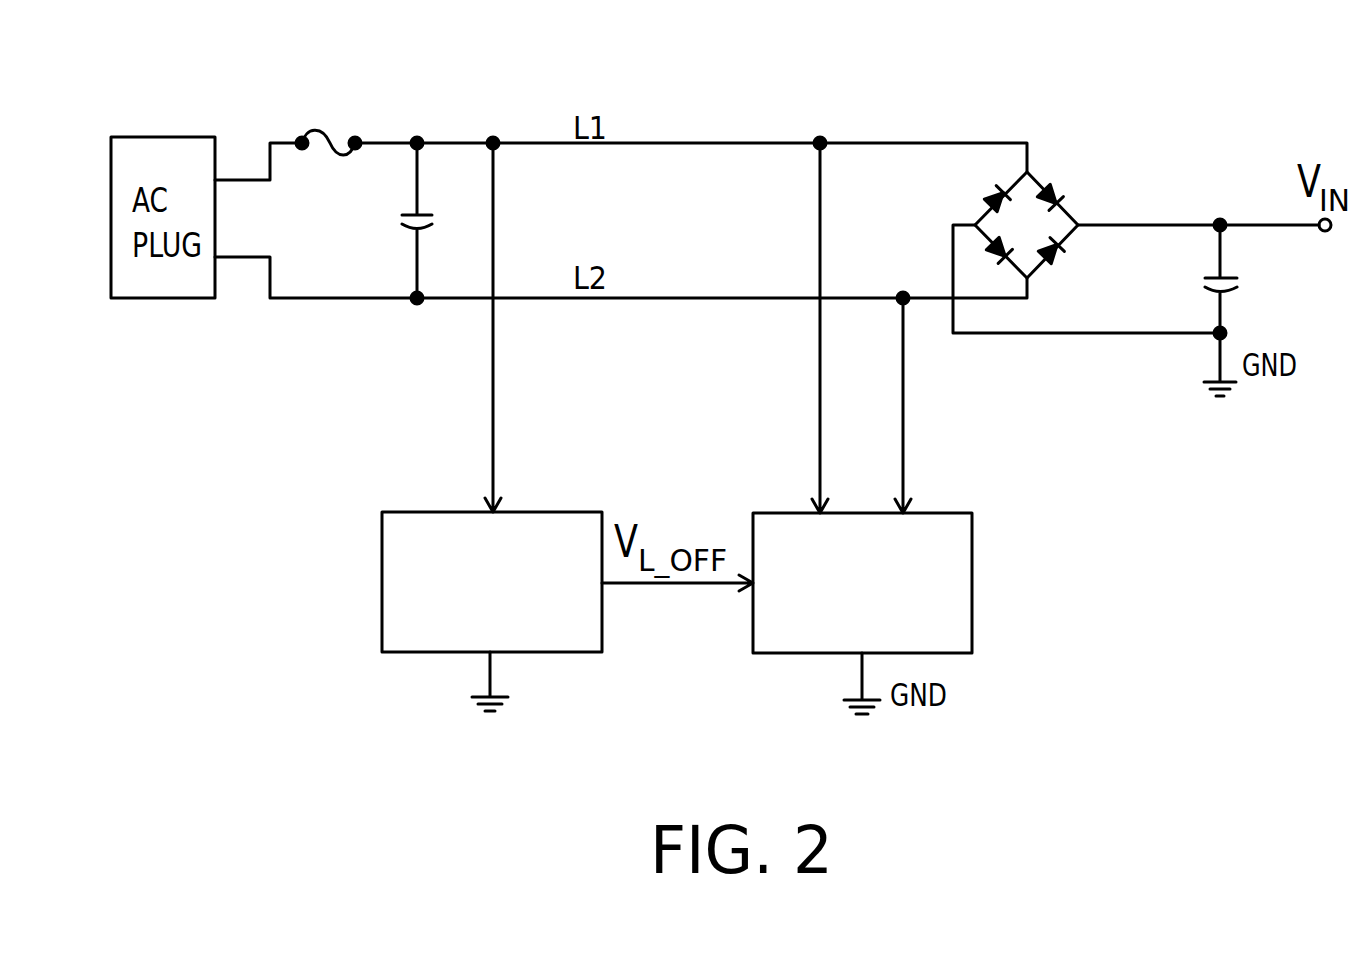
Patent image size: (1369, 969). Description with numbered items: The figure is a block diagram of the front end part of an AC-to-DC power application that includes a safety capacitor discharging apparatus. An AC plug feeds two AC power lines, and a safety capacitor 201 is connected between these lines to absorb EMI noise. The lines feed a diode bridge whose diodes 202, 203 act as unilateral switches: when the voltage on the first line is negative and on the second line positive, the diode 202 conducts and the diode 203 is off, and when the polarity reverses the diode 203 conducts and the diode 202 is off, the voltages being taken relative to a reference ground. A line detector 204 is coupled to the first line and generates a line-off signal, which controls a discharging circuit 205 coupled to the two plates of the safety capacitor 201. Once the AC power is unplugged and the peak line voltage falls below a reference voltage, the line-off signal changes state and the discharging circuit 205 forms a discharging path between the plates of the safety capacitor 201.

The safety capacitor 201 is at (408, 208).
The diode 202 is at (993, 196).
The diode 203 is at (993, 252).
The line detector 204 is at (382, 560).
The discharging circuit 205 is at (972, 578).